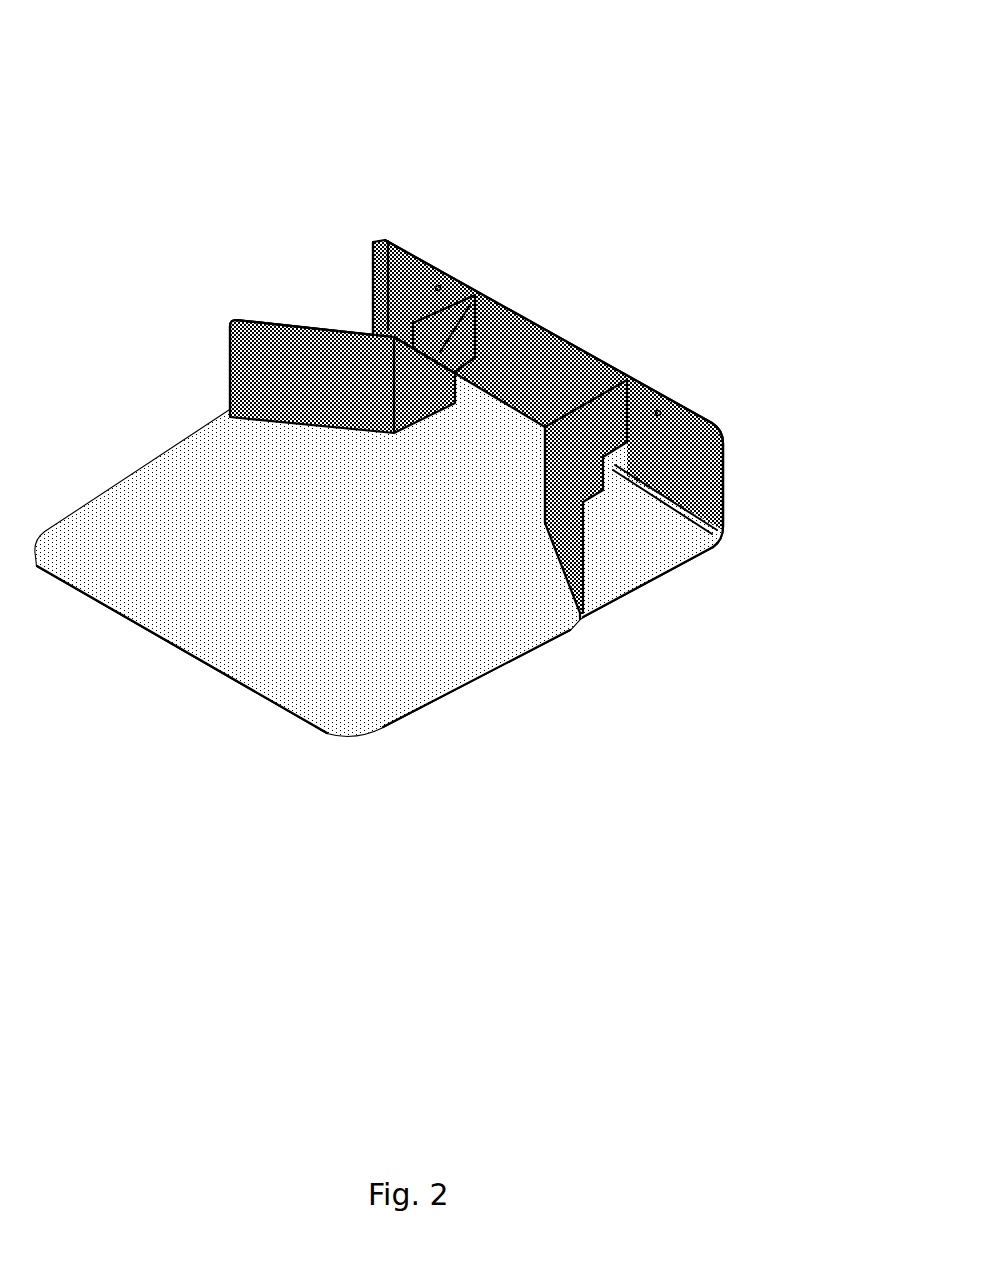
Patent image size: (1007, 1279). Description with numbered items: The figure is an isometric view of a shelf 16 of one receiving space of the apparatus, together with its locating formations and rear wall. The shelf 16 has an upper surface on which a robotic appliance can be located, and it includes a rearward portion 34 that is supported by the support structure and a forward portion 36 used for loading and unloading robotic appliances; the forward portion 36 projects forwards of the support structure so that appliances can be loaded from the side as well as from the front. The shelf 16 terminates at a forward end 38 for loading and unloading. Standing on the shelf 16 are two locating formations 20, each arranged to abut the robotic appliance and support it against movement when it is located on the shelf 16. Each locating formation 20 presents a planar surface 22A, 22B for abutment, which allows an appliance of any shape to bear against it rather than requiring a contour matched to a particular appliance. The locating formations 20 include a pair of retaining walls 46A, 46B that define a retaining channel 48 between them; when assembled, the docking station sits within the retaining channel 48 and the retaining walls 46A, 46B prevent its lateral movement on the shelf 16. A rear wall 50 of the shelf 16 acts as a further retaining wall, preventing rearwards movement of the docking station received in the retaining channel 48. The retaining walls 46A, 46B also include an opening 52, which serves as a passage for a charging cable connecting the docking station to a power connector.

The shelf 16 is at (593, 153).
The locating formation 20 is at (358, 330).
The planar surface 22A is at (560, 515).
The planar surface 22B is at (270, 370).
The rearward portion 34 is at (655, 557).
The forward portion 36 is at (370, 642).
The forward end 38 is at (167, 643).
The retaining wall 46A is at (588, 417).
The retaining wall 46B is at (445, 348).
The retaining channel 48 is at (515, 357).
The rear wall 50 is at (673, 455).
The opening 52 is at (467, 373).